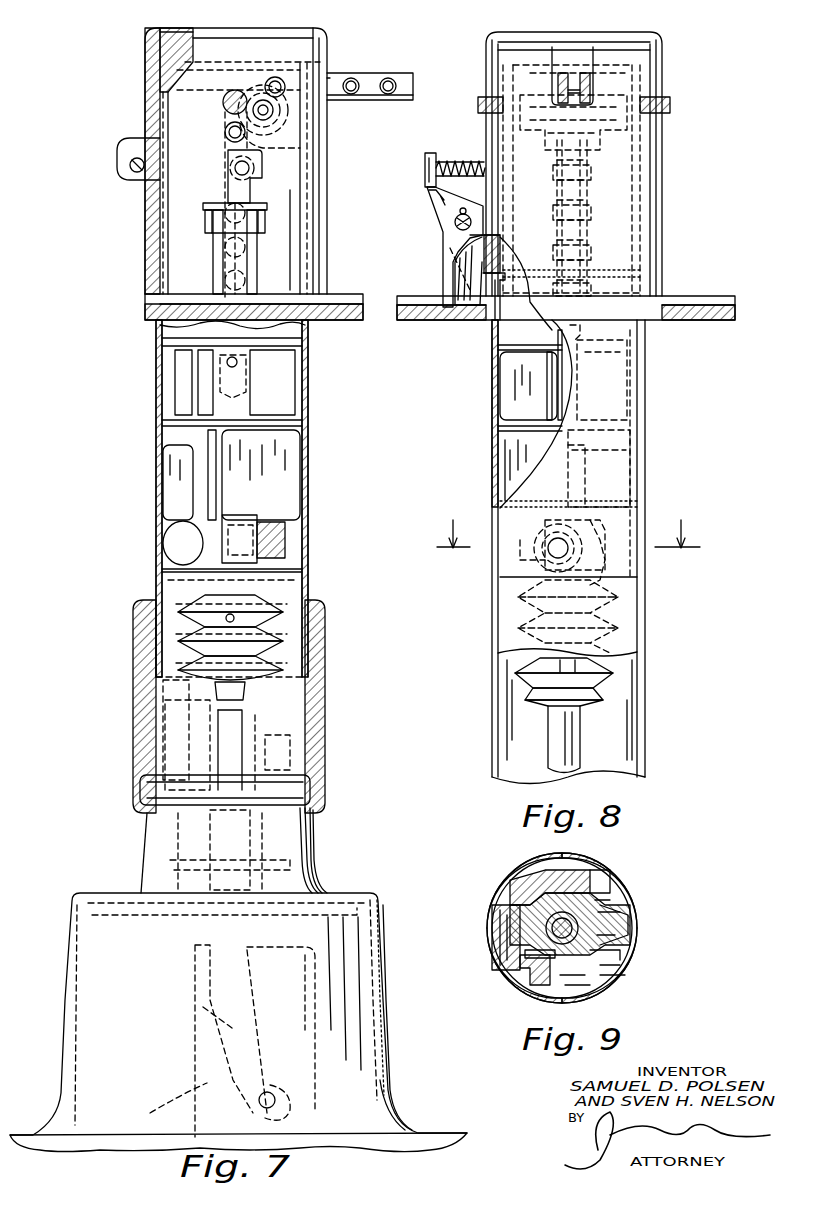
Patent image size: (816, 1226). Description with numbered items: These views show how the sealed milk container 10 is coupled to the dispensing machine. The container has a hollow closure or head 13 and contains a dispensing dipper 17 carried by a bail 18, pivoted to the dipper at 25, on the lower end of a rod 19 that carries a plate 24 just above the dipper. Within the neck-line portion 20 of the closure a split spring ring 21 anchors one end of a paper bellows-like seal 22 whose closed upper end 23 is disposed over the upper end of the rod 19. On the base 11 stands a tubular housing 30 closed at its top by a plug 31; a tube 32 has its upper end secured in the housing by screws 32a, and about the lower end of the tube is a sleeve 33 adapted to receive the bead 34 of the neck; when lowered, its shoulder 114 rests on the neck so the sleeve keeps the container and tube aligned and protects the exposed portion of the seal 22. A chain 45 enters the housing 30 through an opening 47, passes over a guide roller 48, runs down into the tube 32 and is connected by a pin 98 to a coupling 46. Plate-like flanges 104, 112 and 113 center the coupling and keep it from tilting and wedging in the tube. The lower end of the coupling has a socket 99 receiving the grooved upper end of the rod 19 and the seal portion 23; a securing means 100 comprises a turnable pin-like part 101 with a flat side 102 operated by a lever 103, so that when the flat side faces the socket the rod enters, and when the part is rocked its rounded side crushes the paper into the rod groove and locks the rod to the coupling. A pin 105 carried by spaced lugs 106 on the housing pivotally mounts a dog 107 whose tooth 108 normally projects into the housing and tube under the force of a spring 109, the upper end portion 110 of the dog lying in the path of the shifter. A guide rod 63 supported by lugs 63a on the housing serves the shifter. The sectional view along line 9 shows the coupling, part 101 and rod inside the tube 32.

In FIG. 8, the section line 9— 9 is at (568, 520).
In FIG. 7, the container 10 is at (62, 1005).
In FIG. 7, the base 11 is at (360, 292).
In FIG. 8, the base 11 is at (745, 300).
In FIG. 7, the closure or head 13 is at (387, 998).
In FIG. 7, the dispensing dipper 17 is at (164, 1103).
In FIG. 7, the bail 18 is at (203, 1035).
In FIG. 7, the rod 19 is at (235, 838).
In FIG. 8, the rod 19 is at (570, 752).
In FIG. 9, the rod 19 is at (570, 940).
In FIG. 7, the neck-line portion 20 is at (310, 853).
In FIG. 7, the split spring ring 21 is at (157, 900).
In FIG. 7, the extensible bellows-like structure 22 is at (300, 620).
In FIG. 8, the extensible bellows-like structure 22 is at (590, 672).
In FIG. 9, the closed upper end of seal 23 is at (648, 925).
In FIG. 7, the plate 24 is at (98, 913).
In FIG. 7, the pivot 25 is at (292, 1108).
In FIG. 7, the tubular housing 30 is at (140, 100).
In FIG. 8, the tubular housing 30 is at (668, 206).
In FIG. 7, the plug 31 is at (155, 36).
In FIG. 8, the plug 31 is at (582, 36).
In FIG. 7, the tube 32 is at (308, 395).
In FIG. 8, the tube 32 is at (648, 705).
In FIG. 9, the tube 32 is at (640, 935).
In FIG. 7, the screws 32a is at (224, 104).
In FIG. 8, the screws 32a is at (478, 112).
In FIG. 7, the sleeve 33 is at (318, 672).
In FIG. 7, the bead 34 is at (160, 805).
In FIG. 7, the chain 45 is at (378, 75).
In FIG. 8, the chain 45 is at (588, 252).
In FIG. 7, the coupling 46 is at (290, 480).
In FIG. 8, the coupling 46 is at (520, 405).
In FIG. 9, the coupling 46 is at (615, 910).
In FIG. 8, the opening 47 is at (585, 55).
In FIG. 7, the guide pulley or roller 48 is at (312, 148).
In FIG. 8, the guide pulley or roller 48 is at (600, 143).
In FIG. 7, the guide rod 63 is at (133, 170).
In FIG. 7, the lugs 63a is at (119, 158).
In FIG. 7, the pin 98 is at (238, 365).
In FIG. 8, the pin 98 is at (600, 352).
In FIG. 8, the socket 99 is at (620, 540).
In FIG. 8, the securing means 100 is at (615, 470).
In FIG. 9, the securing means 100 is at (598, 885).
In FIG. 7, the pin-like part 101 is at (288, 540).
In FIG. 8, the pin-like part 101 is at (548, 545).
In FIG. 9, the pin-like part 101 is at (525, 985).
In FIG. 8, the flat side 102 is at (548, 555).
In FIG. 9, the flat side 102 is at (493, 935).
In FIG. 7, the lever 103 is at (163, 478).
In FIG. 8, the lever 103 is at (640, 430).
In FIG. 7, the upper plate-like portion (flange) 104 is at (160, 342).
In FIG. 8, the upper plate-like portion (flange) 104 is at (490, 350).
In FIG. 7, the pin 105 is at (206, 224).
In FIG. 8, the pin 105 is at (456, 224).
In FIG. 7, the lugs 106 is at (212, 286).
In FIG. 8, the lugs 106 is at (450, 283).
In FIG. 8, the dog 107 is at (440, 200).
In FIG. 8, the tooth 108 is at (495, 318).
In FIG. 7, the spring 109 is at (230, 158).
In FIG. 8, the spring 109 is at (468, 158).
In FIG. 7, the upper end portion of dog 110 is at (260, 176).
In FIG. 8, the upper end portion of dog 110 is at (426, 152).
In FIG. 7, the flange 112 is at (296, 438).
In FIG. 8, the flange 112 is at (498, 430).
In FIG. 7, the flange 113 is at (296, 572).
In FIG. 8, the flange 113 is at (530, 484).
In FIG. 9, the flange 113 is at (610, 950).
In FIG. 7, the shoulder 114 is at (296, 585).